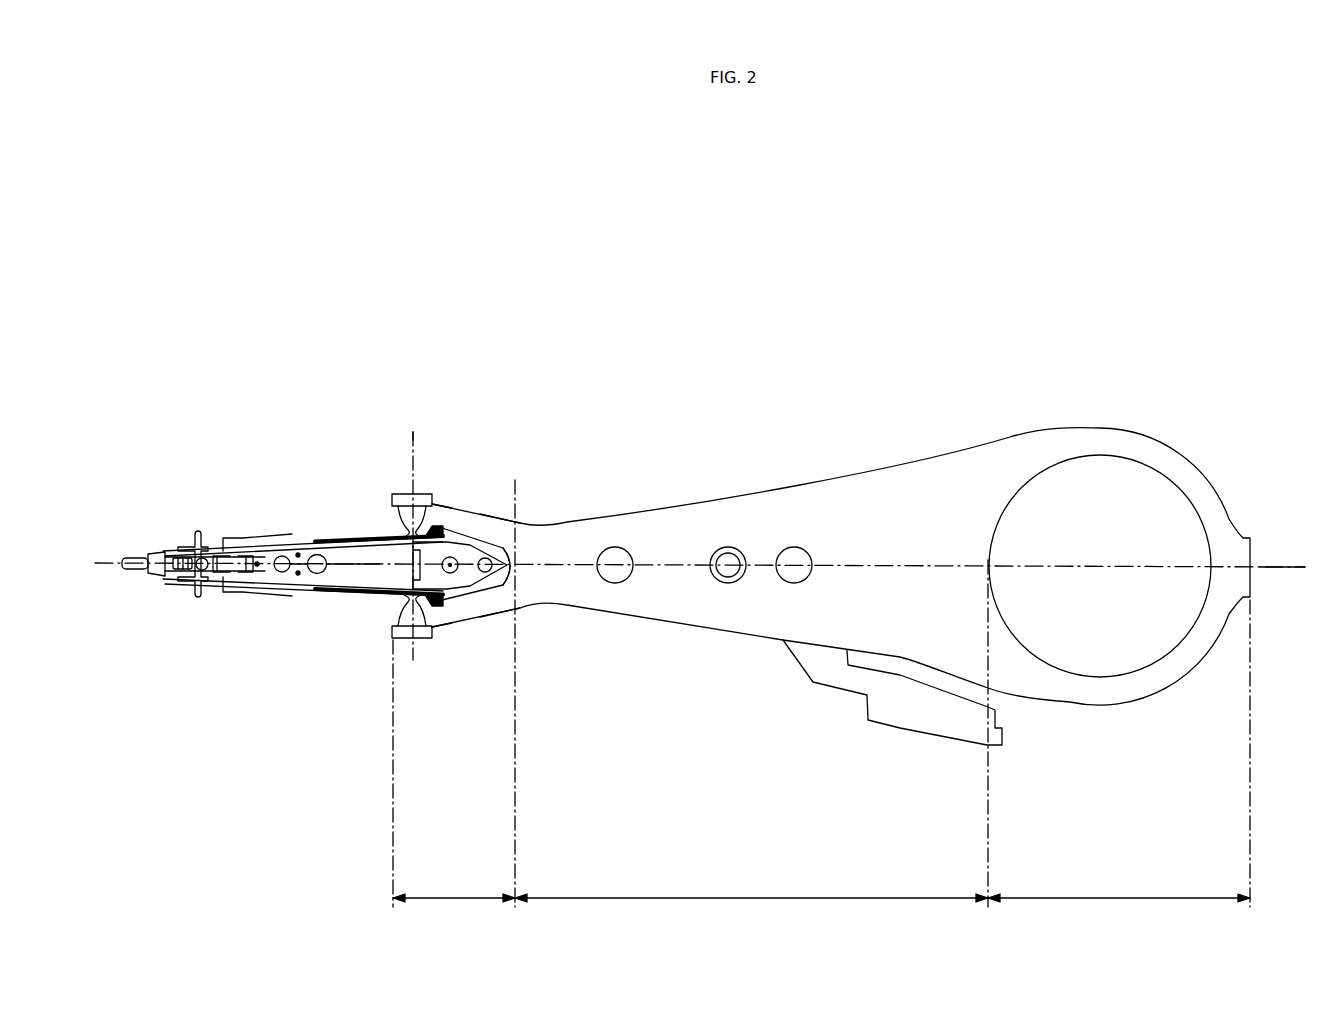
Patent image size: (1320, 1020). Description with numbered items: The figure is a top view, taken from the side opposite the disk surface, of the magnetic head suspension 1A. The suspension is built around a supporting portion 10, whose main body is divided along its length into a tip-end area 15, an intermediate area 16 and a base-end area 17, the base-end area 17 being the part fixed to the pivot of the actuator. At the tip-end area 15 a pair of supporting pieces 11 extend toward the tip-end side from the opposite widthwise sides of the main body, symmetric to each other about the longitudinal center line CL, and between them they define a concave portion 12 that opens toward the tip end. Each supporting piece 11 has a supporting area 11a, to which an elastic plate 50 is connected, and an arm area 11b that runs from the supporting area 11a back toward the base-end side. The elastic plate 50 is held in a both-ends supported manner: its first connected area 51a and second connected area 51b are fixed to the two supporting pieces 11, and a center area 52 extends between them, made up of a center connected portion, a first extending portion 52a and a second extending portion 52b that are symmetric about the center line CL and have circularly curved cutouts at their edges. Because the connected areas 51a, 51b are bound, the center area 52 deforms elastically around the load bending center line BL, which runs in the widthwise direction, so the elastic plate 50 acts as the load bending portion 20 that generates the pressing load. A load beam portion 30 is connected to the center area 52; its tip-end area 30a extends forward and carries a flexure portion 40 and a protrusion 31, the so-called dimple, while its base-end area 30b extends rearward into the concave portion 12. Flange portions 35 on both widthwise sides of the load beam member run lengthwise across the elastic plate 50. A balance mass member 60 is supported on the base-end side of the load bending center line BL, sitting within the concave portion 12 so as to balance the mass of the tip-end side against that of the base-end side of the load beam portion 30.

The magnetic head suspension 1A is at (683, 466).
The supporting portion 10 is at (681, 660).
The supporting pieces 11 is at (462, 497).
The supporting areas 11a is at (420, 502).
The arm areas 11b is at (500, 522).
The concave portion 12 is at (508, 562).
The tip-end area 15 is at (454, 773).
The intermediate area 16 is at (751, 693).
The base-end area 17 is at (1119, 733).
The load bending portion 20 is at (401, 577).
The load beam portion 30 is at (430, 566).
The tip-end area 30a is at (342, 570).
The base-end area 30b is at (446, 527).
The protrusion 31 is at (203, 571).
The flange portions 35 is at (300, 546).
The flexure portion 40 is at (248, 591).
The elastic plate 50 is at (386, 524).
The first connected area 51a is at (398, 642).
The second connected area 51b is at (396, 493).
The center area 52 is at (370, 571).
The first extending portion 52a is at (394, 597).
The second extending portion 52b is at (383, 525).
The balance mass member 60 is at (447, 626).
The load bending center line BL is at (414, 432).
The longitudinal center line CL is at (1277, 565).